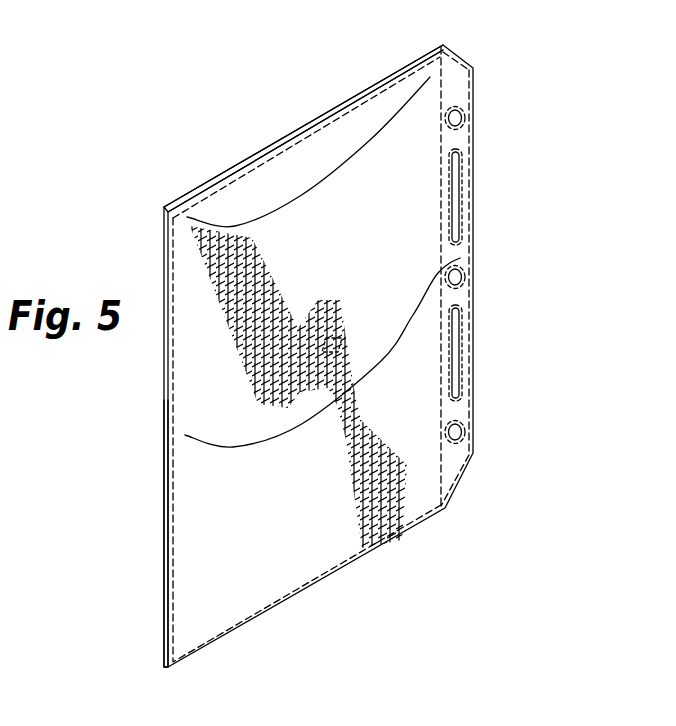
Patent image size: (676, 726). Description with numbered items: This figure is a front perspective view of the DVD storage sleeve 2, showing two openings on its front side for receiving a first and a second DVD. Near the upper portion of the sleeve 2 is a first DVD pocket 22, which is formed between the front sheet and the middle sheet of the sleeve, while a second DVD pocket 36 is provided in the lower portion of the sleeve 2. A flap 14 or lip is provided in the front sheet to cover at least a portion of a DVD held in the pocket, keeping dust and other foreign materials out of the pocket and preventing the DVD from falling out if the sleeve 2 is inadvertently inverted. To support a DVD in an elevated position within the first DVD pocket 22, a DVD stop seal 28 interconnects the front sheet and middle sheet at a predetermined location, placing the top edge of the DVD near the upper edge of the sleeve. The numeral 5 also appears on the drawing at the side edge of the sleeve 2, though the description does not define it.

The DVD storage sleeve 2 is at (492, 150).
The side edge (spine) of the holder 5 is at (183, 503).
The flap 14 is at (290, 170).
The first DVD pocket 22 is at (377, 147).
The DVD stop seal 28 is at (336, 345).
The second DVD pocket 36 is at (460, 258).